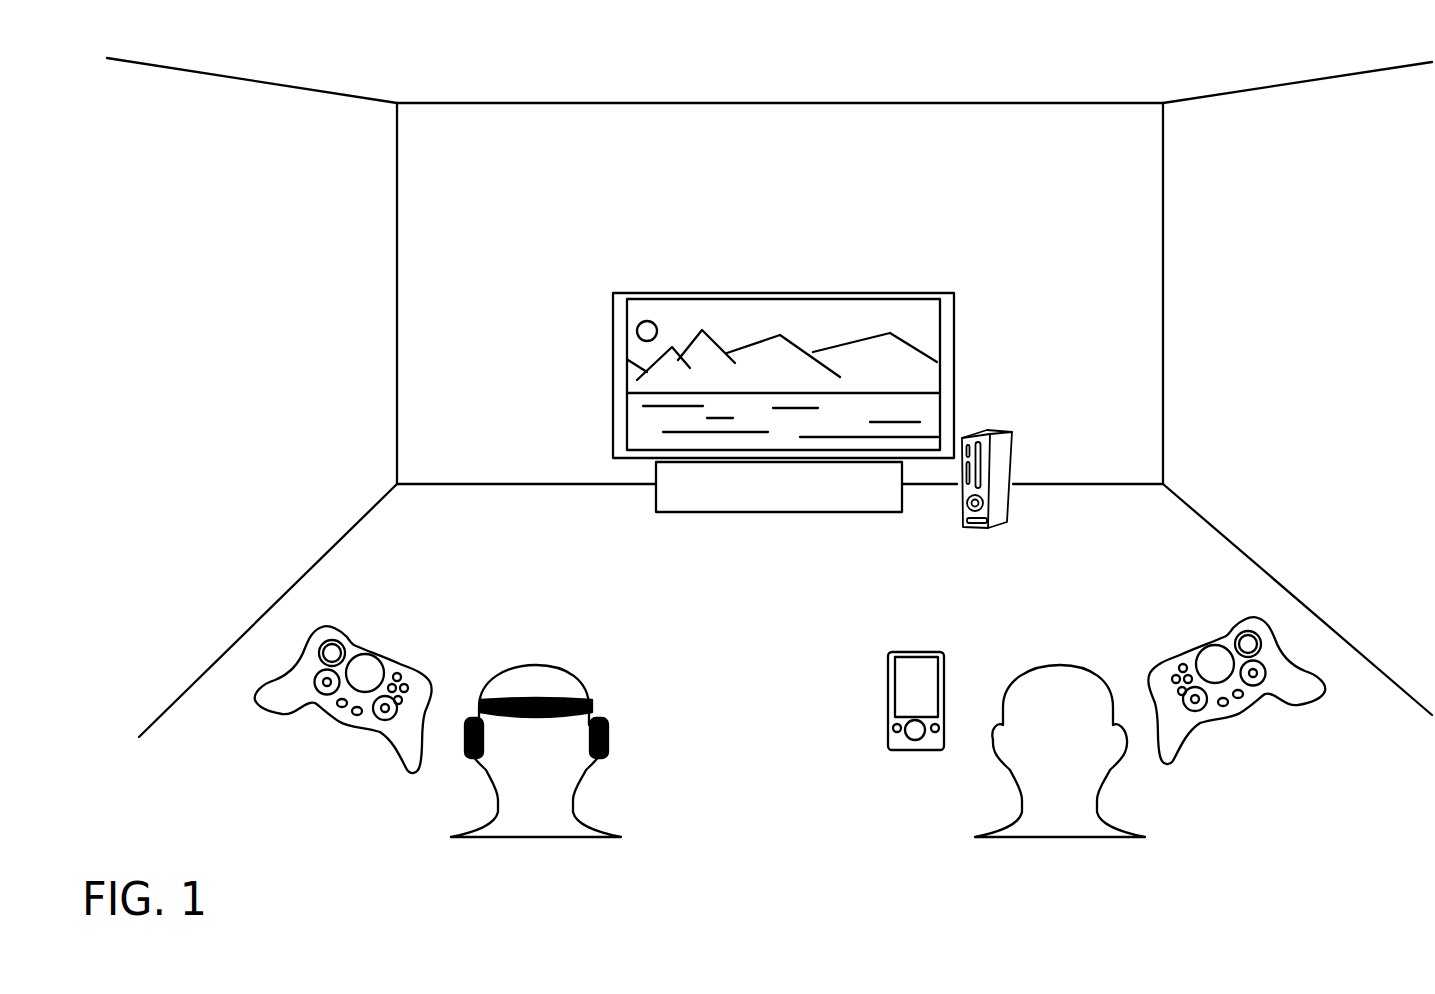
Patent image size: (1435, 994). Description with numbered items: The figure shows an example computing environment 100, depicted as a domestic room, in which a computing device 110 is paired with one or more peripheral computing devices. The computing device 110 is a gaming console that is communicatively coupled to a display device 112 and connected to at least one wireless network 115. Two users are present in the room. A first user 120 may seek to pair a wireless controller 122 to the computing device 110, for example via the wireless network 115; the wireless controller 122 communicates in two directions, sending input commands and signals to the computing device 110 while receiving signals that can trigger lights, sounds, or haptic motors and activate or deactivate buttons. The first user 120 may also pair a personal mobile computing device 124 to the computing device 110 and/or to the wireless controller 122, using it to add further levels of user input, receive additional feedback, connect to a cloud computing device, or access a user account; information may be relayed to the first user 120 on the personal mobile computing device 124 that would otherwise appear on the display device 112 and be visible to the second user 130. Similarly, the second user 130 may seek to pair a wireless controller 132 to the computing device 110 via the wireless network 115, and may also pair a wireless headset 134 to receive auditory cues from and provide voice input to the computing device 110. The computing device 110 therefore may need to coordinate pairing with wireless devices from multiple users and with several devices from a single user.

The computing environment 100 is at (889, 59).
The computing device 110 is at (983, 430).
The display device 112 is at (885, 329).
The wireless network 115 is at (865, 381).
The first user 120 is at (1042, 802).
The wireless controller 122 is at (1183, 748).
The personal mobile computing device 124 is at (912, 650).
The second user 130 is at (513, 802).
The wireless controller 132 is at (282, 714).
The wireless headset 134 is at (608, 737).